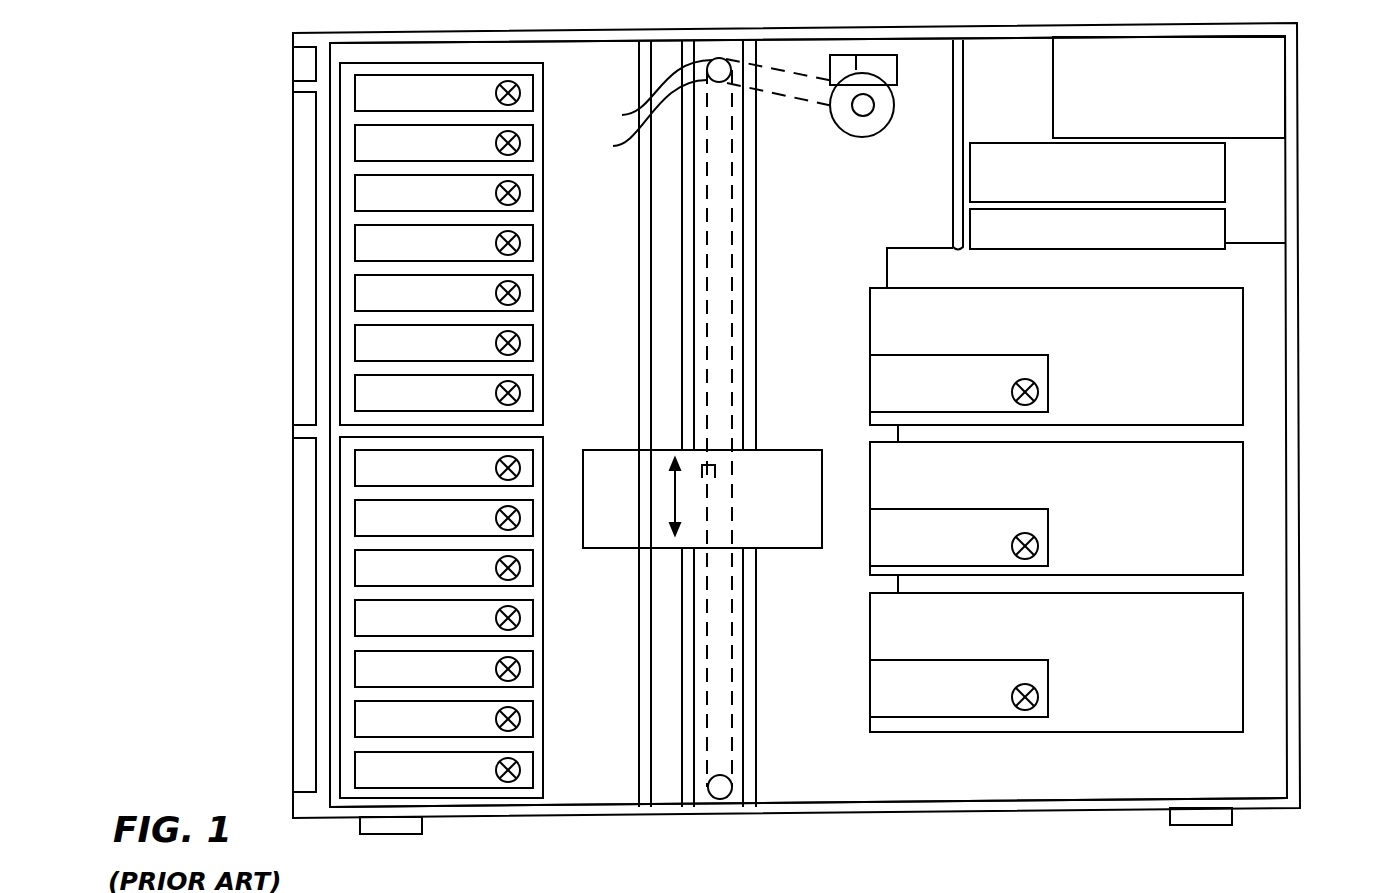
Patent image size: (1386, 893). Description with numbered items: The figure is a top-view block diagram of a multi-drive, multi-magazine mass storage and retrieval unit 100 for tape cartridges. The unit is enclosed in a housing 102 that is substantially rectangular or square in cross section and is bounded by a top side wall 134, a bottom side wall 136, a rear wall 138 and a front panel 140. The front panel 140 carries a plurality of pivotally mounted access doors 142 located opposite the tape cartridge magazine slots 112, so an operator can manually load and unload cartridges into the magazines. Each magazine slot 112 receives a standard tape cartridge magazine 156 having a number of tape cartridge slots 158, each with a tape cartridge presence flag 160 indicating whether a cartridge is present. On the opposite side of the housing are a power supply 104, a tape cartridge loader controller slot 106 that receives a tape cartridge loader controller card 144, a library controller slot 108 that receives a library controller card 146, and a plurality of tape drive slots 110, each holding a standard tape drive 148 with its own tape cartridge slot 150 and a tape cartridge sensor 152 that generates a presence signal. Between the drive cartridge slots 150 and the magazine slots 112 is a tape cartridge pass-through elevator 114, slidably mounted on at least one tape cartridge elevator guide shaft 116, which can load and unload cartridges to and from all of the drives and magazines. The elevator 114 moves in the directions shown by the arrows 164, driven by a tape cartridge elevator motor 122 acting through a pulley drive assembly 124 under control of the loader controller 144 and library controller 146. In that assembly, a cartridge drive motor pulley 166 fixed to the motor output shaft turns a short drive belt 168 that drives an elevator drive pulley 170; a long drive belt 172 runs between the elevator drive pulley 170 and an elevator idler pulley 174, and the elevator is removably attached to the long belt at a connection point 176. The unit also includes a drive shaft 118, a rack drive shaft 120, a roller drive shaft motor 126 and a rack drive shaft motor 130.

The mass storage and retrieval unit 100 is at (210, 432).
The housing 102 is at (1003, 20).
The power supply 104 is at (1275, 118).
The tape cartridge loader controller slot 106 is at (1225, 182).
The library controller slot 108 is at (1225, 228).
The tape drive slots 110 is at (1243, 312).
The tape cartridge magazine slots 112 is at (548, 185).
The tape cartridge pass-through elevator 114 is at (793, 549).
The tape cartridge elevator guide shaft 116 is at (636, 236).
The drive shaft 118 is at (680, 268).
The rack drive shaft 120 is at (758, 293).
The tape cartridge elevator motor 122 is at (847, 127).
The pulley drive assembly 124 is at (655, 91).
The roller drive shaft motor 126 is at (897, 68).
The rack drive shaft motor 130 is at (830, 66).
The top side wall 134 is at (578, 38).
The bottom side wall 136 is at (1022, 806).
The rear wall 138 is at (1297, 28).
The front panel 140 is at (292, 37).
The access doors 142 is at (300, 200).
The tape cartridge loader controller card 144 is at (985, 160).
The library controller card 146 is at (975, 220).
The tape drive 148 is at (1227, 352).
The tape cartridge slot 150 is at (928, 355).
The tape cartridge sensor 152 is at (1040, 392).
The tape cartridge magazine 156 is at (343, 245).
The tape cartridge slots 158 is at (545, 770).
The tape cartridge presence flag 160 is at (520, 770).
The arrows 164 is at (673, 503).
The cartridge drive motor pulley 166 is at (871, 115).
The short drive belt 168 is at (780, 98).
The elevator drive pulley 170 is at (638, 107).
The long drive belt 172 is at (734, 345).
The elevator idler pulley 174 is at (732, 787).
The connection point 176 is at (700, 465).